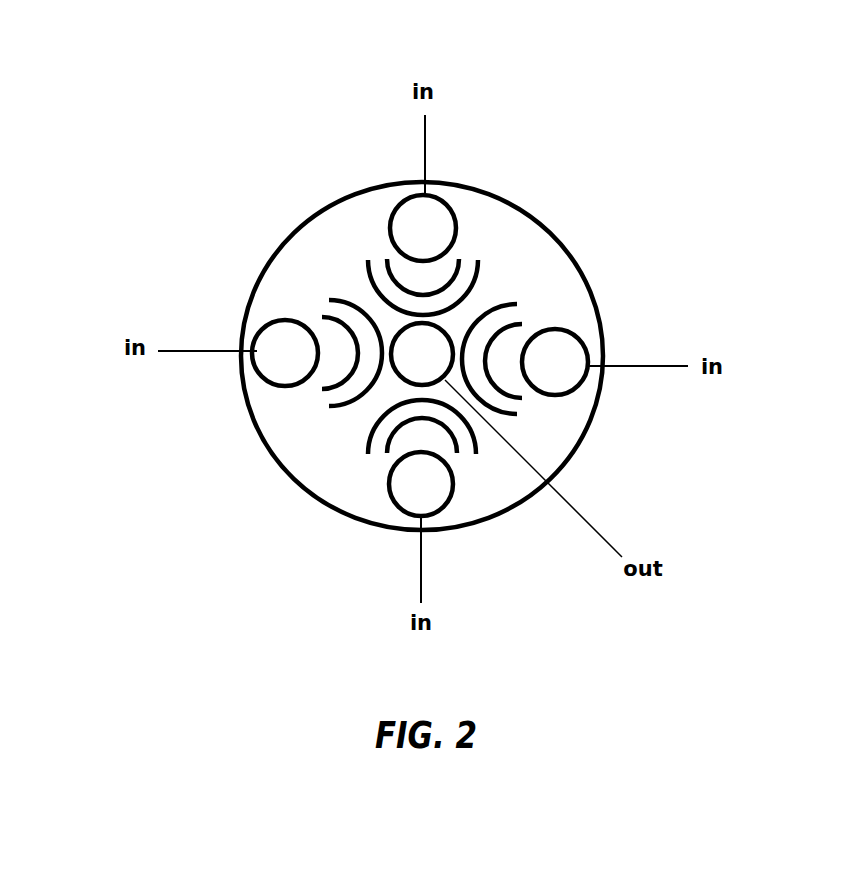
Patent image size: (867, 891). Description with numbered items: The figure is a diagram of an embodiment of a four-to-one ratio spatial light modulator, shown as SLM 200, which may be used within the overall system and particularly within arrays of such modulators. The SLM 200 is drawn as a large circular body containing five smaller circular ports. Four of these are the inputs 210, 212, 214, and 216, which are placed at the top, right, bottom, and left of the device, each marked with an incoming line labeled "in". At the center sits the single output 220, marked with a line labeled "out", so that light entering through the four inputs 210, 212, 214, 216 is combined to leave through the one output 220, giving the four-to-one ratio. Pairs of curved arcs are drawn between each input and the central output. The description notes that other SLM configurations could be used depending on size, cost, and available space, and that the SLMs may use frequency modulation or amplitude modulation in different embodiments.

The spatial light modulator 200 is at (104, 83).
The input 210 is at (390, 200).
The input 212 is at (585, 342).
The input 214 is at (388, 492).
The input 216 is at (267, 320).
The output 220 is at (448, 332).